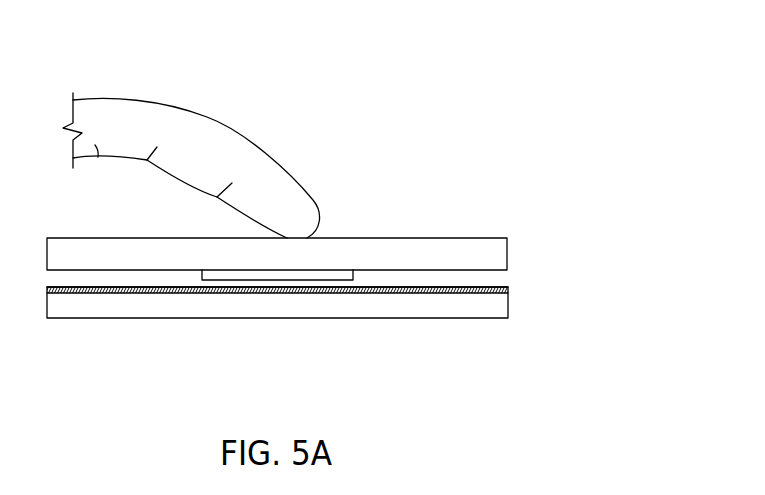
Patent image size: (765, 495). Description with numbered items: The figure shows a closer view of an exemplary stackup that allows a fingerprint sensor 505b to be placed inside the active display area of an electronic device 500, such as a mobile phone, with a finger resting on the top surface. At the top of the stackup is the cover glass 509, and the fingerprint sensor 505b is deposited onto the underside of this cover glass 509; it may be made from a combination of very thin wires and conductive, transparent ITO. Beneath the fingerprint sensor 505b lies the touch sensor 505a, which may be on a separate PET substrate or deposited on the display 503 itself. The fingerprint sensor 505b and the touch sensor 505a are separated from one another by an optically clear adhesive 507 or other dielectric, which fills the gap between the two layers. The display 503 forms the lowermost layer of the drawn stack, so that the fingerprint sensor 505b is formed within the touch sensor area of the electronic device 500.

The electronic device 500 is at (384, 115).
The display 503 is at (472, 336).
The touch sensor 505a is at (479, 294).
The fingerprint sensor 505b is at (358, 264).
The optically clear adhesive 507 is at (513, 276).
The cover glass 509 is at (475, 228).